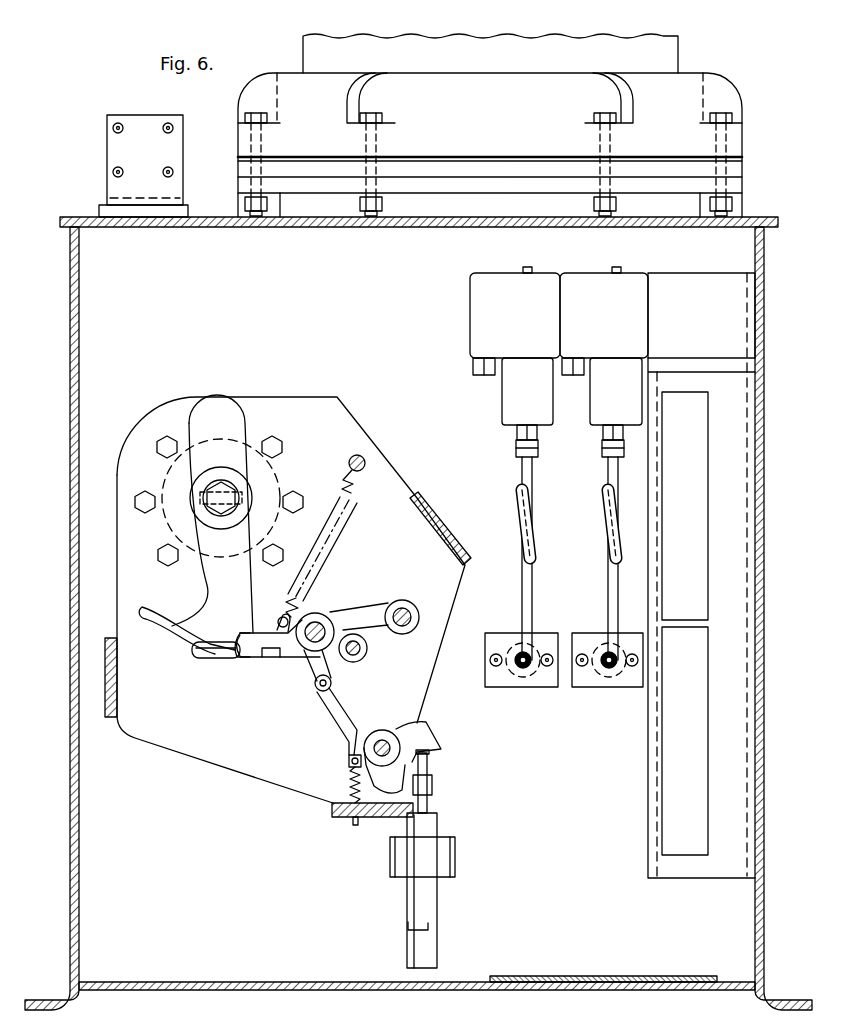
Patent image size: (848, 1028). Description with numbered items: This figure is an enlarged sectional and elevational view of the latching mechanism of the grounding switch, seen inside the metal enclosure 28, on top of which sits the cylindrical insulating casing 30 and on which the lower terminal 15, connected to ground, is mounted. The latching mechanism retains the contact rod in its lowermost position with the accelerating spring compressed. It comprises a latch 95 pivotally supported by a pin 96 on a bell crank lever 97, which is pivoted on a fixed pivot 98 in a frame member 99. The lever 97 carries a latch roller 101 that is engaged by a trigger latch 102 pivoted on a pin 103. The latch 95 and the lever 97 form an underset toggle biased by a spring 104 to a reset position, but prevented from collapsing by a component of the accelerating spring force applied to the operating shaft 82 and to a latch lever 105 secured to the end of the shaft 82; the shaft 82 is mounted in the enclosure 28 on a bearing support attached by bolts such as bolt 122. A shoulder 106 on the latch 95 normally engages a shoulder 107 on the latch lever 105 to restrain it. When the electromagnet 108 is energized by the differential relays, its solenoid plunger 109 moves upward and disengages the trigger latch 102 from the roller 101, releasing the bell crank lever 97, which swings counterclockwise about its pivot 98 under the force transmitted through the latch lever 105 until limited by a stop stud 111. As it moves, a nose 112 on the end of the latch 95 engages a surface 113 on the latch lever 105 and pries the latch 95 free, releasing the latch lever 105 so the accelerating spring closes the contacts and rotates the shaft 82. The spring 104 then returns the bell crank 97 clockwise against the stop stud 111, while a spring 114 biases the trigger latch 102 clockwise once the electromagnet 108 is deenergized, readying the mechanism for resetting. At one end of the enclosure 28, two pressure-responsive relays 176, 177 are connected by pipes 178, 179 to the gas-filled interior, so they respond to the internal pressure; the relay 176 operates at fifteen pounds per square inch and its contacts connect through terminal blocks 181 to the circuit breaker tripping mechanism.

The lower terminal 15 is at (170, 147).
The metal enclosure 28 is at (70, 505).
The cylindrical insulating casing 30 is at (285, 56).
The operating shaft 82 is at (207, 510).
The latch 95 is at (279, 659).
The pin 96 is at (314, 629).
The bell crank lever 97 is at (371, 612).
The fixed pivot 98 is at (404, 610).
The frame member 99 is at (383, 473).
The latch roller 101 is at (318, 689).
The trigger latch 102 is at (355, 712).
The pin 103 is at (372, 748).
The spring 104 is at (352, 492).
The latch lever 105 is at (217, 577).
The shoulder 106 is at (243, 660).
The shoulder 107 is at (232, 637).
The electromagnet 108 is at (443, 860).
The solenoid plunger 109 is at (428, 767).
The stop stud 111 is at (362, 657).
The nose 112 is at (197, 656).
The surface 113 is at (170, 630).
The spring 114 is at (350, 778).
The bolt 122 is at (158, 442).
The pressure-responsive relay 176 is at (477, 334).
The pressure-responsive relay 177 is at (588, 282).
The pipe 178 is at (514, 528).
The pipe 179 is at (603, 528).
The terminal block 181 is at (703, 553).